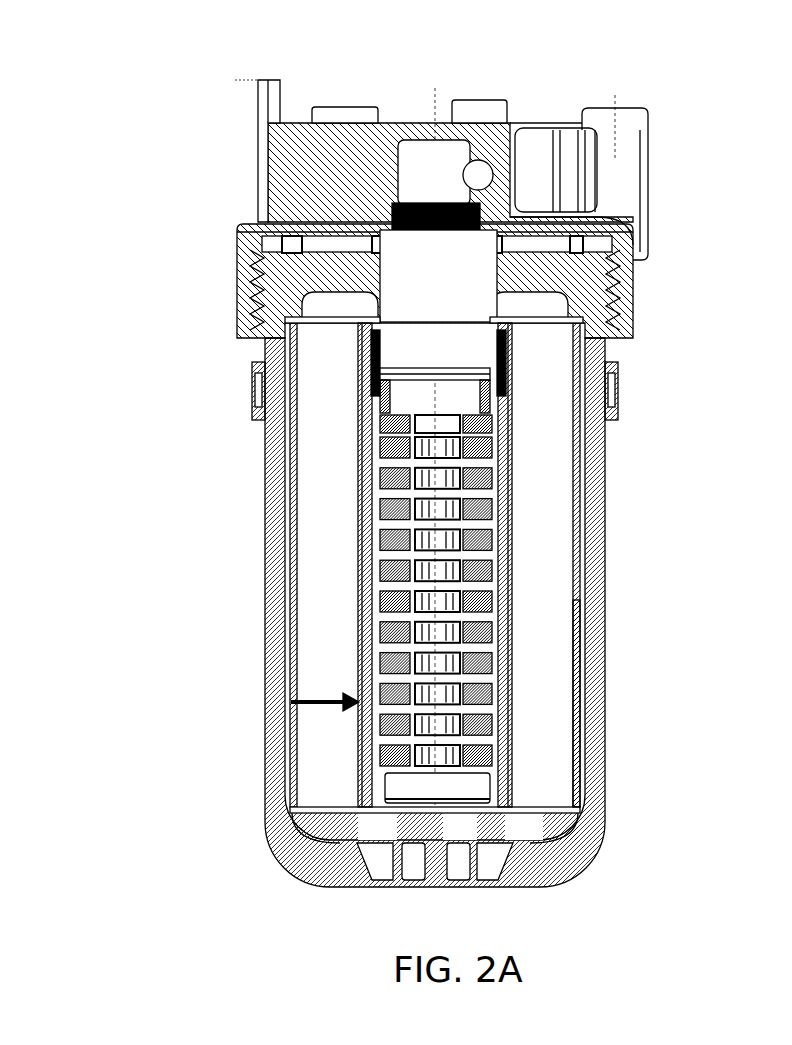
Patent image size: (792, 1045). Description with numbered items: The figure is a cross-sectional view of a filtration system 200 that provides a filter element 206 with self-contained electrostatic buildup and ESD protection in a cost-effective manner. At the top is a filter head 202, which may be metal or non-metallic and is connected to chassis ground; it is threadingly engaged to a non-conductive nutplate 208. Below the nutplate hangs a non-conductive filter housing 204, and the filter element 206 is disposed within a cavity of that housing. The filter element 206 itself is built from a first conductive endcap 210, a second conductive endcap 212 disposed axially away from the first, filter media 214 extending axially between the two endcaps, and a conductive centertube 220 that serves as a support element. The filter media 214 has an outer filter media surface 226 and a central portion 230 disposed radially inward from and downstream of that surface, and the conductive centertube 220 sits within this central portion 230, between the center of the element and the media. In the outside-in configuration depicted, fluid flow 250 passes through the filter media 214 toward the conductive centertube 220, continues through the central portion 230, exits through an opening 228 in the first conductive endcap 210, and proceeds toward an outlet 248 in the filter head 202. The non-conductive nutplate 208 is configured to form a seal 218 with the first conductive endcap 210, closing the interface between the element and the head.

The filtration system 200 is at (218, 124).
The filter head 202 is at (314, 196).
The non-conductive filter housing 204 is at (259, 687).
The filter element 206 is at (570, 464).
The non-conductive nutplate 208 is at (277, 293).
The first conductive endcap 210 is at (561, 325).
The second conductive endcap 212 is at (508, 780).
The filter media 214 is at (555, 570).
The seal 218 is at (364, 377).
The conductive centertube 220 is at (513, 510).
The filter media surface 226 is at (581, 717).
The opening 228 is at (425, 350).
The central portion 230 is at (456, 647).
The outlet 248 is at (605, 178).
The fluid flow 250 is at (347, 683).